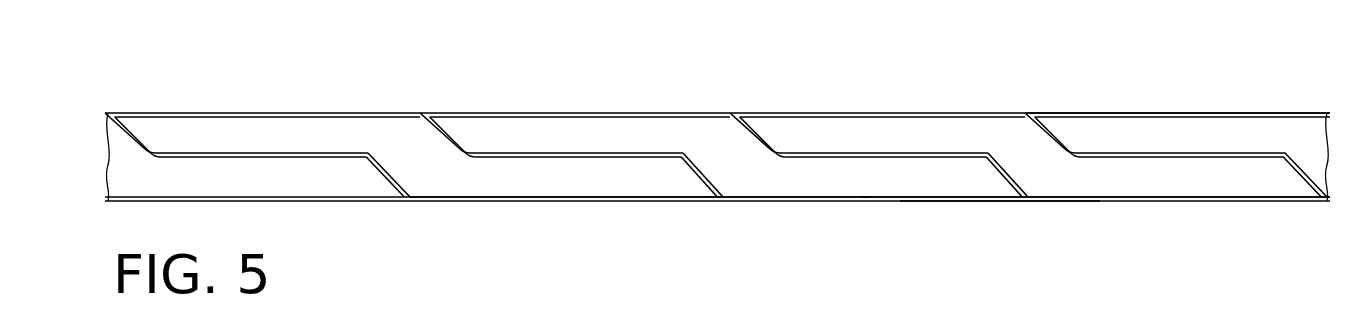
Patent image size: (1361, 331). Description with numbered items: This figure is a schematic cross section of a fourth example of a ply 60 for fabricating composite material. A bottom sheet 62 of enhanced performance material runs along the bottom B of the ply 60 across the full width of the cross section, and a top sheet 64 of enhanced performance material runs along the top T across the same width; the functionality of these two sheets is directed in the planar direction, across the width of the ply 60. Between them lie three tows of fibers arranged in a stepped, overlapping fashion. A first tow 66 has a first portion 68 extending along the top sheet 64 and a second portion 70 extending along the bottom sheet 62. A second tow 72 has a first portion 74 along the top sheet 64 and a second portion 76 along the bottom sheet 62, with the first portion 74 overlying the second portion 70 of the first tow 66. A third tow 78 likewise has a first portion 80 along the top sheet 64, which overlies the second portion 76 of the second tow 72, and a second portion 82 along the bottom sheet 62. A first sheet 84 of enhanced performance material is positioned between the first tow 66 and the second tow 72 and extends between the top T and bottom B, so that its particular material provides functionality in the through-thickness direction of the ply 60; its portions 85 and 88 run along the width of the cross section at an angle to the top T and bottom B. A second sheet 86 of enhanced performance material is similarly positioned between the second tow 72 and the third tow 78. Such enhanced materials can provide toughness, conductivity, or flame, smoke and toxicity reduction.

The ply 60 is at (1202, 82).
The top T is at (1088, 112).
The bottom B is at (1000, 203).
The bottom sheet 62 is at (653, 202).
The top sheet 64 is at (745, 112).
The first tow 66 is at (410, 162).
The first portion 68 is at (253, 130).
The second portion 70 is at (533, 183).
The second tow 72 is at (745, 160).
The first portion 74 is at (520, 128).
The second portion 76 is at (860, 182).
The third tow 78 is at (1033, 168).
The first portion 80 is at (913, 133).
The second portion 82 is at (1200, 180).
The first sheet 84 is at (583, 152).
The portion 85 is at (443, 130).
The second sheet 86 is at (845, 155).
The portion 88 is at (700, 178).